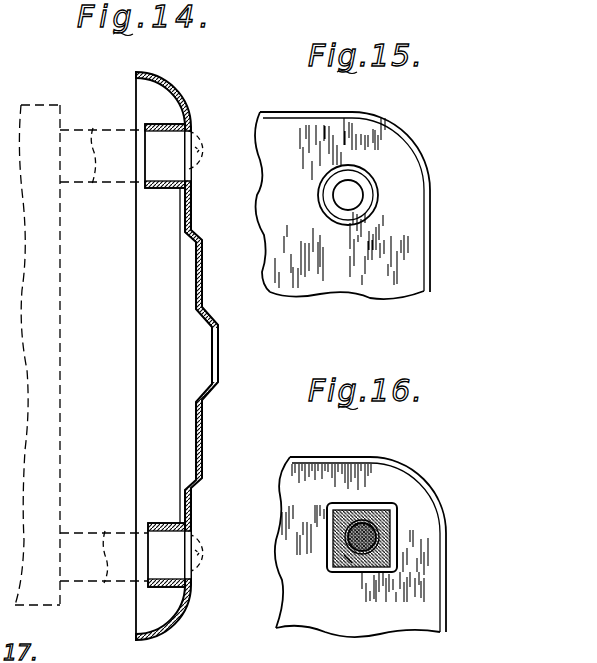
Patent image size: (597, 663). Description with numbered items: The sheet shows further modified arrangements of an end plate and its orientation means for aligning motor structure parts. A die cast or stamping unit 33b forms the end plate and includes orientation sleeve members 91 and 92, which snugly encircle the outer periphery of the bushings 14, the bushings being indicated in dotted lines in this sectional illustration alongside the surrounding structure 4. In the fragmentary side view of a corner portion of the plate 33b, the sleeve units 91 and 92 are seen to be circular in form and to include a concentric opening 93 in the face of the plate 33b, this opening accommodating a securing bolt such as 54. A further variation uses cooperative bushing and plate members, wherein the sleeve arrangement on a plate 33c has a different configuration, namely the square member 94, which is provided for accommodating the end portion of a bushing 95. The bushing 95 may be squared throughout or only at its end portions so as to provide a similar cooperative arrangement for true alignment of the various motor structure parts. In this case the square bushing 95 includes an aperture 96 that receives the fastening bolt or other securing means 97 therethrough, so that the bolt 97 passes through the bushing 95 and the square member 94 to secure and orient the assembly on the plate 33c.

In FIG. 14, the housing 4 is at (63, 331).
In FIG. 14, the bushings 14 is at (111, 136).
In FIG. 14, the die cast or stamping unit 33b is at (200, 300).
In FIG. 15, the die cast or stamping unit 33b is at (407, 240).
In FIG. 16, the plate 33c is at (402, 488).
In FIG. 14, the securing bolt 54 is at (197, 148).
In FIG. 14, the orientation sleeve member 91 is at (158, 124).
In FIG. 15, the orientation sleeve member 91 is at (376, 197).
In FIG. 14, the orientation sleeve member 92 is at (163, 588).
In FIG. 15, the concentric opening 93 is at (351, 187).
In FIG. 16, the square member 94 is at (397, 520).
In FIG. 16, the square bushing 95 is at (382, 563).
In FIG. 16, the aperture 96 is at (378, 542).
In FIG. 16, the fastening bolt or other securing means 97 is at (350, 558).